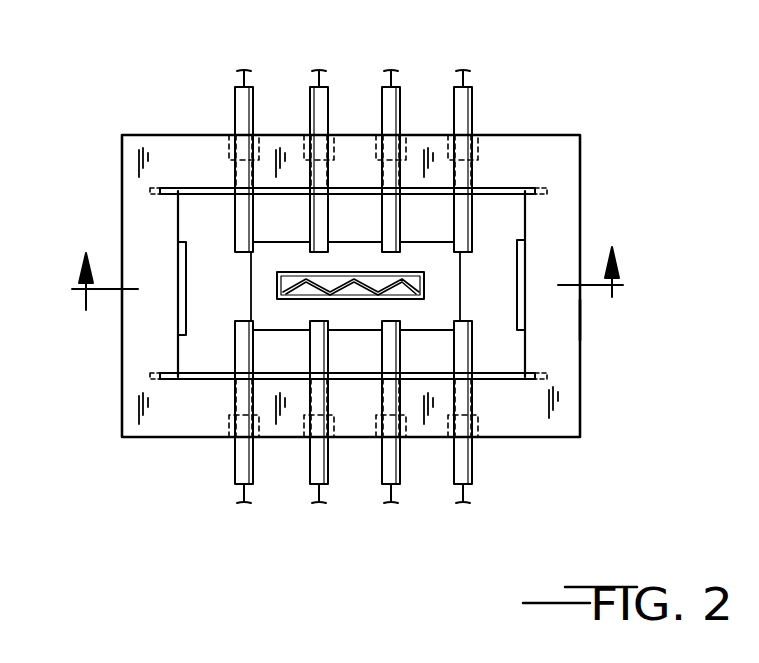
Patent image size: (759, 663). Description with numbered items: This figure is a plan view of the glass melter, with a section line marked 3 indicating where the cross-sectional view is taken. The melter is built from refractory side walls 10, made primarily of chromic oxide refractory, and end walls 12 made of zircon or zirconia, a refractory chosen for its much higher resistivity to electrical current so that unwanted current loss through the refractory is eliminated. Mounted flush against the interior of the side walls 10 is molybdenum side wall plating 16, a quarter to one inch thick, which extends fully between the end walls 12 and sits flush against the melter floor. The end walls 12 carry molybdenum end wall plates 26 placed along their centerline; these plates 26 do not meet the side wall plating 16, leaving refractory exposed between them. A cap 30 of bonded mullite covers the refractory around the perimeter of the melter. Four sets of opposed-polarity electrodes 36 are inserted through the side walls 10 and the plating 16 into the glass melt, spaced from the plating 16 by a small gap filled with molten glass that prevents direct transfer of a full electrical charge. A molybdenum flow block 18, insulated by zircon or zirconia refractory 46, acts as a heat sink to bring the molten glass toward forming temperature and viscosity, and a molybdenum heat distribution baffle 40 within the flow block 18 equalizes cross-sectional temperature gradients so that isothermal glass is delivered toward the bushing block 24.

The side walls 10 is at (497, 158).
The end walls 12 is at (559, 321).
The molybdenum side wall plating 16 is at (200, 190).
The flow block 18 is at (265, 268).
The bushing block 24 is at (425, 279).
The molybdenum end wall plates 26 is at (177, 307).
The cap 30 is at (558, 172).
The electrodes 36 is at (310, 97).
The heat distribution baffle 40 is at (279, 304).
The zircon or zirconia refractory 46 is at (507, 227).
The section line 3- 3 is at (347, 262).